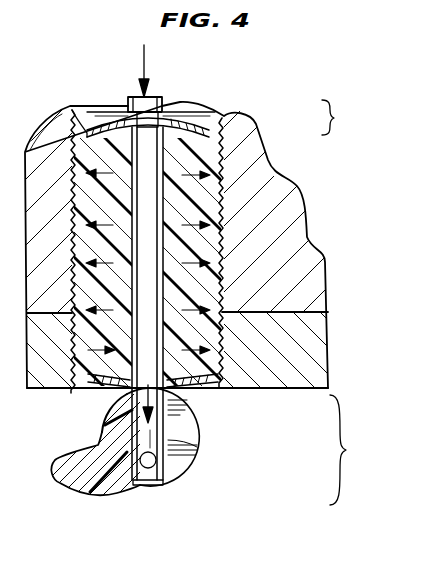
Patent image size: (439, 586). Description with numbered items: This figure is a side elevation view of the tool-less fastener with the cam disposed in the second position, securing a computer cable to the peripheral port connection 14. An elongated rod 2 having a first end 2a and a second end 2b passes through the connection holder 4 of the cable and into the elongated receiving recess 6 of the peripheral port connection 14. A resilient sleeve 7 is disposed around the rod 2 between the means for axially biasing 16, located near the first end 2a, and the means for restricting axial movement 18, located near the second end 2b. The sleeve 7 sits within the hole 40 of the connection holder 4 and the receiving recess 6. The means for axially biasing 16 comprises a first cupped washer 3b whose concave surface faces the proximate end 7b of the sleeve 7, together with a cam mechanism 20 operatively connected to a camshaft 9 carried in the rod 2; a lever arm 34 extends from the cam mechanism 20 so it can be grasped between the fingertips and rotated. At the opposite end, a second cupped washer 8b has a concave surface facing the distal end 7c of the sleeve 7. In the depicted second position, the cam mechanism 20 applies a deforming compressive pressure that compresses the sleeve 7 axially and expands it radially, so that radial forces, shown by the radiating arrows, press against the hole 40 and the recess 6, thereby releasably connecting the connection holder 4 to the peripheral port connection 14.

The elongated rod 2 is at (163, 288).
The first end 2a is at (155, 486).
The second end 2b is at (128, 98).
The first cupped washer 3b is at (203, 390).
The connection holder 4 is at (272, 390).
The elongated receiving recess 6 is at (198, 104).
The resilient sleeve 7 is at (212, 287).
The proximate end 7b is at (90, 398).
The distal end 7c is at (92, 122).
The second cupped washer 8b is at (100, 128).
The camshaft 9 is at (147, 468).
The peripheral port connection 14 is at (310, 238).
The means for axially biasing the rod 16 is at (353, 450).
The means for restricting axial movement 18 is at (343, 117).
The cam mechanism 20 is at (193, 475).
The lever arm 34 is at (63, 483).
The hole 40 is at (96, 420).